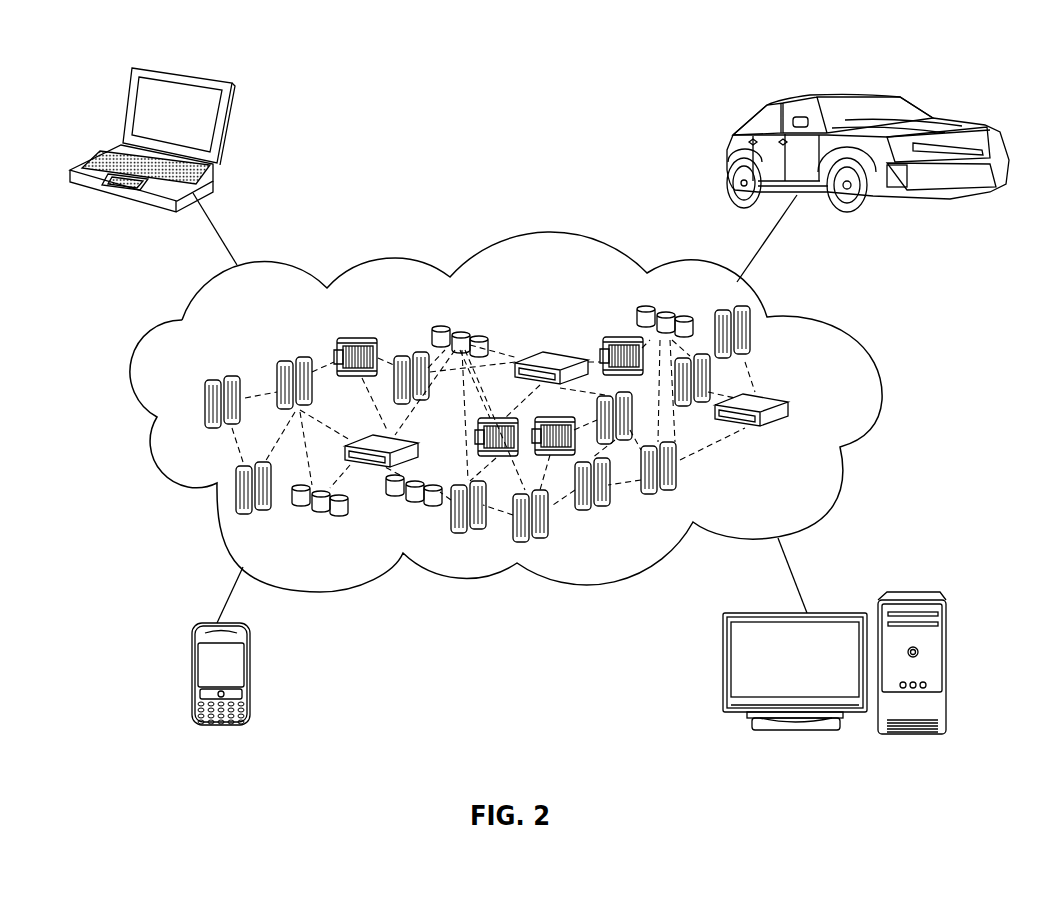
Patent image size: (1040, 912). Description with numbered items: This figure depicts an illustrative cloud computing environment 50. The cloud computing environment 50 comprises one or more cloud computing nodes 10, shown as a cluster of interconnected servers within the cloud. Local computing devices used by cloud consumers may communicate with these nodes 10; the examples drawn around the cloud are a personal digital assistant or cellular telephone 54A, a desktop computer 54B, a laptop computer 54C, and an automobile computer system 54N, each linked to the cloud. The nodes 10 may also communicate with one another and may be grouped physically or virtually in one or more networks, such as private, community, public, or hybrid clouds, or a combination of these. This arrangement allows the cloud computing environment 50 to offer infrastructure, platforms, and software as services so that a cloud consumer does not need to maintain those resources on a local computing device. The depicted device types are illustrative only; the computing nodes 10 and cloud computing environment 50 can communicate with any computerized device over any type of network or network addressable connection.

The cloud computing node 10 is at (827, 404).
The cloud computing environment 50 is at (847, 330).
The personal digital assistant (PDA) or cellular telephone 54A is at (192, 678).
The desktop computer 54B is at (917, 592).
The laptop computer 54C is at (228, 128).
The automobile computer system 54N is at (735, 135).